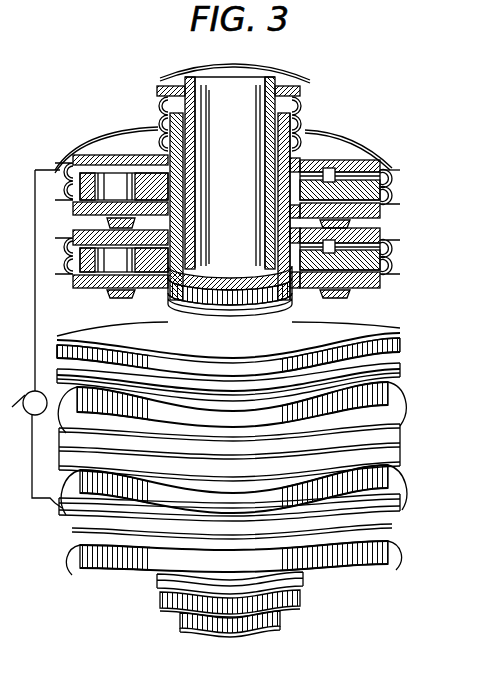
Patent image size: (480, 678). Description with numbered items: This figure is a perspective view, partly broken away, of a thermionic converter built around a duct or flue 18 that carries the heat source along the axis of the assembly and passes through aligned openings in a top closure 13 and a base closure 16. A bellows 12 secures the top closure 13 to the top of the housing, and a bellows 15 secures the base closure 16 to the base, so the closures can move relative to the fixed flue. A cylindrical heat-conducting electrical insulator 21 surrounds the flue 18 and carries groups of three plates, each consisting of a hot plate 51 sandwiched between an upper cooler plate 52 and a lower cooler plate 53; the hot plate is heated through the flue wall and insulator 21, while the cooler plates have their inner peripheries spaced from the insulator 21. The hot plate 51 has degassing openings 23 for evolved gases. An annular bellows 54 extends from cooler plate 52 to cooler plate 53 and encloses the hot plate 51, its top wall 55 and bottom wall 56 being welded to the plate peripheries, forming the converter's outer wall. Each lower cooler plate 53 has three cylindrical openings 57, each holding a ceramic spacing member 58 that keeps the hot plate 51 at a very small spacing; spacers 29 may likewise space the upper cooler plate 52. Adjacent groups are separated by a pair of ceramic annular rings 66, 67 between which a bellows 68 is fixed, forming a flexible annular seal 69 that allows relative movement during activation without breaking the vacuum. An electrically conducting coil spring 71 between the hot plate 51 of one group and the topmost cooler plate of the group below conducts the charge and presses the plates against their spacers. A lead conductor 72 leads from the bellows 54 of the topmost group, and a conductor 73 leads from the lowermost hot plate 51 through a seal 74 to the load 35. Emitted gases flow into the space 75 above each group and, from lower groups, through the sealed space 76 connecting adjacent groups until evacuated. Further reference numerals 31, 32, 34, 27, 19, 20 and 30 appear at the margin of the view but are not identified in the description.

The partial numeral (cut off) 31 is at (28, 14).
The partial numeral (cut off) 32 is at (39, 24).
The partial numeral (cut off) 34 is at (7, 42).
The partial numeral (cut off) 27 is at (13, 73).
The partial numeral (cut off) 19 is at (7, 98).
The partial numeral (cut off) 20 is at (5, 125).
The partial numeral (cut off) 30 is at (5, 324).
The duct or flue 18 is at (248, 116).
The cylindrical heat-conducting electrical insulator 21 is at (278, 180).
The top closure 13 is at (305, 84).
The cylindrical openings 57 is at (290, 212).
The bellows 12 is at (308, 117).
The cooler plate 52 is at (150, 157).
The space 75 is at (100, 165).
The lead conductor 72 is at (35, 198).
The load 35 is at (29, 403).
The cooler plate 53 is at (107, 223).
The degassing openings 23 is at (72, 176).
The bellows 54 is at (70, 252).
The sealed space 76 is at (152, 297).
The electrically conducting coil spring 71 is at (178, 302).
The hot plate 51 is at (379, 160).
The spacers 29 is at (328, 168).
The top wall 55 is at (392, 169).
The bottom wall 56 is at (378, 205).
The ceramic spacing member 58 is at (275, 262).
The bellows 68 is at (352, 290).
The ceramic annular ring 66 is at (270, 330).
The flexible annular seal 69 is at (323, 304).
The ceramic annular ring 67 is at (332, 293).
The seal 74 is at (53, 505).
The conductor 73 is at (36, 500).
The bellows 15 is at (157, 592).
The base closure 16 is at (180, 617).